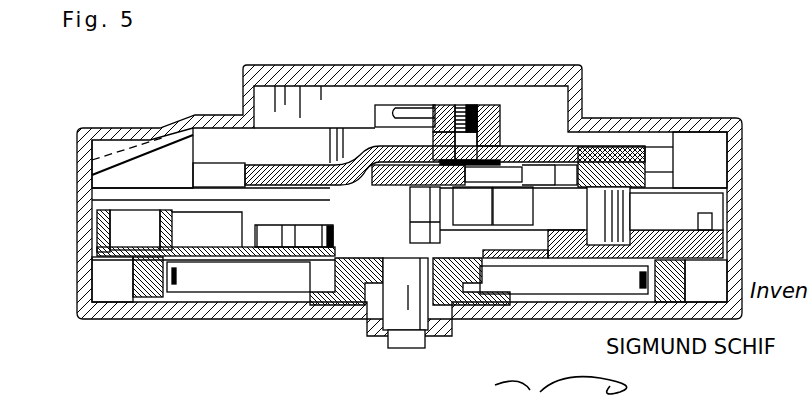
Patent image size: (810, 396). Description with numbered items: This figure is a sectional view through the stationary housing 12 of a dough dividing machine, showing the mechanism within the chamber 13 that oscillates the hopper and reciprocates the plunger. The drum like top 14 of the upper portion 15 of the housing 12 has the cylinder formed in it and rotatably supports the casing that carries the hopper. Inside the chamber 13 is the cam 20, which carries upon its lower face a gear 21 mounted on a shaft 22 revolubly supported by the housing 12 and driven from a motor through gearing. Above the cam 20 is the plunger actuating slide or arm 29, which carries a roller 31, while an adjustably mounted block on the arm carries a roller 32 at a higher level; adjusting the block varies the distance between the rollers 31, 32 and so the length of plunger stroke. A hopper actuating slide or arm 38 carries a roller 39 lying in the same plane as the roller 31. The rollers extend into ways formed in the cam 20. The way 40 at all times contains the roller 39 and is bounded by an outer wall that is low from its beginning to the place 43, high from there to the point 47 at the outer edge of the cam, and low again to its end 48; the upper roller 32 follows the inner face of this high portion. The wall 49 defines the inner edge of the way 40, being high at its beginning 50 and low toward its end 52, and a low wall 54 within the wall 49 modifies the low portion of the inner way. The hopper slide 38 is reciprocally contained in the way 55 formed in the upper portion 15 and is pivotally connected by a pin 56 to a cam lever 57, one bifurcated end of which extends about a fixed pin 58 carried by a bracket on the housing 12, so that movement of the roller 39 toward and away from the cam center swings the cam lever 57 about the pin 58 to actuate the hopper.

The housing 12 is at (105, 320).
The chamber 13 is at (128, 262).
The drum like top 14 is at (245, 82).
The upper portion 15 is at (126, 127).
The cam 20 is at (128, 205).
The gear 21 is at (197, 290).
The shaft 22 is at (403, 348).
The plunger actuating slide or arm 29 is at (387, 172).
The roller 31 is at (406, 223).
The roller 32 is at (532, 200).
The hopper actuating slide or arm 38 is at (657, 162).
The roller 39 is at (586, 229).
The way 40 is at (582, 268).
The place 43 is at (98, 224).
The point 47 is at (698, 218).
The end 48 is at (247, 256).
The wall 49 is at (132, 236).
The beginning 50 is at (250, 201).
The end 52 is at (292, 258).
The low wall 54 is at (322, 302).
The way 55 is at (232, 175).
The pin 56 is at (500, 100).
The cam lever 57 is at (440, 106).
The fixed pin 58 is at (416, 105).